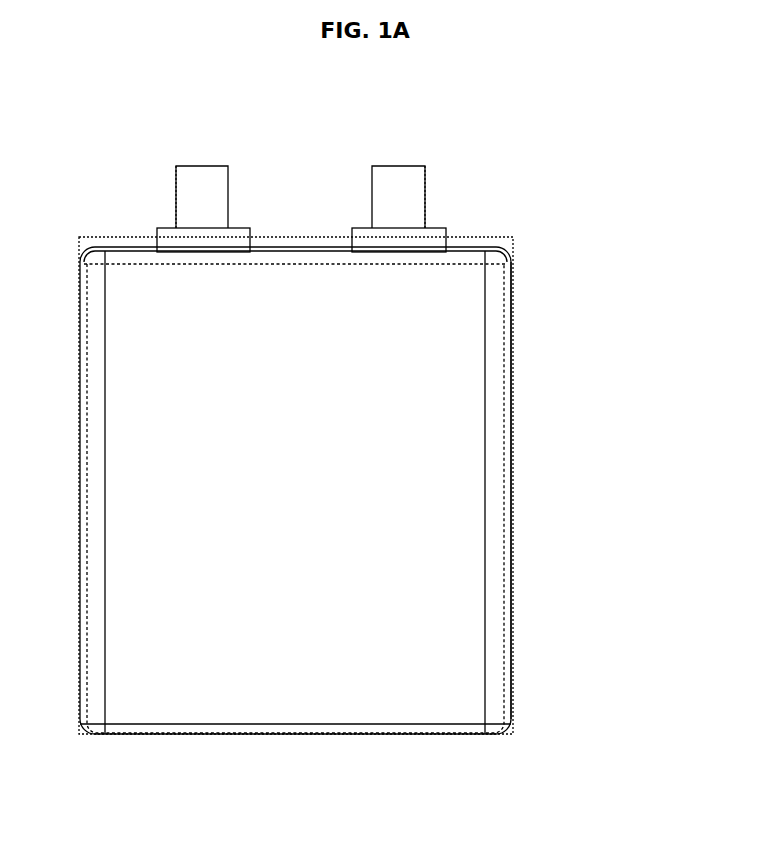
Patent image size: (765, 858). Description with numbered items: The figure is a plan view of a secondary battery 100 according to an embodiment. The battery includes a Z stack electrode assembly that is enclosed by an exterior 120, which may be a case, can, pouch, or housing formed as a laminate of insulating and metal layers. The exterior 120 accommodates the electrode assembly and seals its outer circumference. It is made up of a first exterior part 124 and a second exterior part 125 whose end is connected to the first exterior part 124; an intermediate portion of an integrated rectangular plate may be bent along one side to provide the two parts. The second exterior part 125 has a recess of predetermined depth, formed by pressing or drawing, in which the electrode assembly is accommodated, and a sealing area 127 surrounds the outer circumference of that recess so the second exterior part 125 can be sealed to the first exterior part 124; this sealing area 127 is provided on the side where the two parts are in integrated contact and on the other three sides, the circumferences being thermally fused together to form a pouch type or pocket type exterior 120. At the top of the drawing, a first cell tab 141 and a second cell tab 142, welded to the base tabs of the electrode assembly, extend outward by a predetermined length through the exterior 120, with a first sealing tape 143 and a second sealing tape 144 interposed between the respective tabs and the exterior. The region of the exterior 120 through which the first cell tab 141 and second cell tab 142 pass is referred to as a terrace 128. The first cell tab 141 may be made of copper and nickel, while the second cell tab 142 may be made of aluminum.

The secondary battery 100 is at (567, 158).
The exterior 120 is at (523, 745).
The first exterior part 124 is at (523, 485).
The second exterior part 125 is at (466, 648).
The sealing area 127 is at (512, 374).
The terrace 128 is at (110, 244).
The first cell tab 141 is at (203, 172).
The second cell tab 142 is at (400, 172).
The first sealing tape 143 is at (240, 231).
The second sealing tape 144 is at (435, 231).